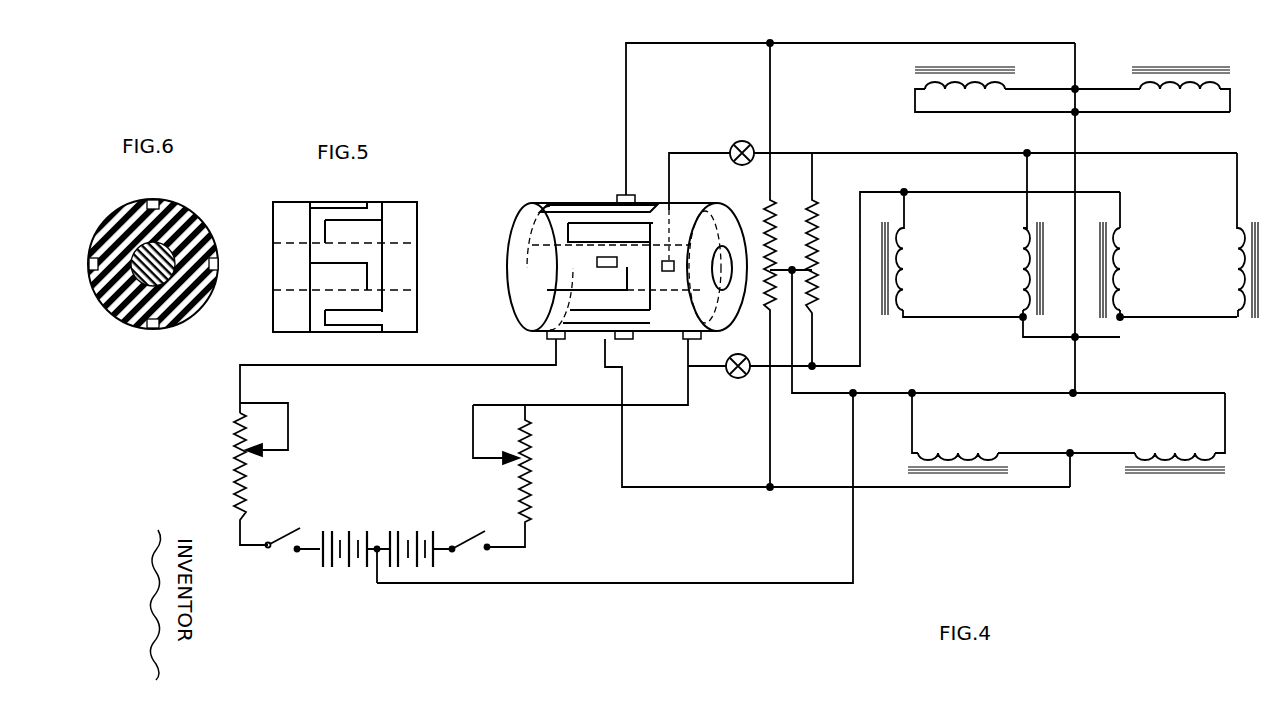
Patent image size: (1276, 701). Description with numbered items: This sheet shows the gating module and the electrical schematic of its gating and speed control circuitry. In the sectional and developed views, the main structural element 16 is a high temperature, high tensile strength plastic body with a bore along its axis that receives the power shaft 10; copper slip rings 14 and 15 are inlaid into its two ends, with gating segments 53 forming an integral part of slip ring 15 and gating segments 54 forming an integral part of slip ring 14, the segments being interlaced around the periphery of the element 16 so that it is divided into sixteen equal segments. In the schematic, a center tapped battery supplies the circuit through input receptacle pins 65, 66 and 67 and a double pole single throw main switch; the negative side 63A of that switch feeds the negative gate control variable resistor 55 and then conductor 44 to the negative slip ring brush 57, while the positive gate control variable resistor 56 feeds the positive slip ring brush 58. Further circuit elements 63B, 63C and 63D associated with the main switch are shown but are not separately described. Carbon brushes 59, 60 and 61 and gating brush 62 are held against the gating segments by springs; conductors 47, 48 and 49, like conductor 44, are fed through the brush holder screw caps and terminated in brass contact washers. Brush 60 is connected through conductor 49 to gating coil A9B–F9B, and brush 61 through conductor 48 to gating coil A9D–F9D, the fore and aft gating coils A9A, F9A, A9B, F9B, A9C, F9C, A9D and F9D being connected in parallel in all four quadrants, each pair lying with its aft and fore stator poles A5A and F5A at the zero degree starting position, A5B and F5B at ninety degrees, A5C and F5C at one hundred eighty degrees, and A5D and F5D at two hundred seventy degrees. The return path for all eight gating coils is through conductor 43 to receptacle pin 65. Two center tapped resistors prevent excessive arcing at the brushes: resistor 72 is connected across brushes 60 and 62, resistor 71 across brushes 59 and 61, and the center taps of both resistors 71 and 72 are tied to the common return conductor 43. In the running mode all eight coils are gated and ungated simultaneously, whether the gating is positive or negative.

In FIG. 6, the power shaft 10 is at (138, 268).
In FIG. 5, the slip ring 14 is at (402, 203).
In FIG. 4, the slip ring 14 is at (720, 204).
In FIG. 5, the slip ring 15 is at (273, 228).
In FIG. 4, the slip ring 15 is at (515, 210).
In FIG. 6, the main structural element 16 is at (112, 230).
In FIG. 4, the return conductor 43 is at (850, 514).
In FIG. 4, the conductor 44 is at (390, 368).
In FIG. 4, the conductor 47 is at (682, 152).
In FIG. 4, the conductor 48 is at (622, 455).
In FIG. 4, the conductor 49 is at (745, 43).
In FIG. 6, the gating segments 53 is at (128, 208).
In FIG. 5, the gating segments 53 is at (316, 207).
In FIG. 4, the gating segments 53 is at (560, 197).
In FIG. 6, the gating segments 54 is at (157, 202).
In FIG. 5, the gating segments 54 is at (378, 235).
In FIG. 4, the gating segments 54 is at (570, 229).
In FIG. 4, the negative gate control variable resistor 55 is at (232, 470).
In FIG. 4, the positive gate control variable resistor 56 is at (535, 474).
In FIG. 4, the negative slip ring brush 57 is at (547, 337).
In FIG. 4, the positive slip ring brush 58 is at (683, 338).
In FIG. 4, the carbon brush 59 is at (672, 258).
In FIG. 4, the carbon brush 60 is at (617, 196).
In FIG. 4, the carbon brush 61 is at (600, 262).
In FIG. 4, the gating brush 62 is at (615, 338).
In FIG. 4, the negative side of main switch 63A is at (260, 557).
In FIG. 4, the switch 63B is at (489, 549).
In FIG. 4, the indicator lamp 63C is at (716, 136).
In FIG. 4, the indicator lamp 63D is at (730, 372).
In FIG. 4, the input receptacle pin 65 is at (378, 536).
In FIG. 4, the input receptacle pin 66 is at (312, 538).
In FIG. 4, the input receptacle pin 67 is at (444, 542).
In FIG. 4, the center tapped resistor 71 is at (810, 312).
In FIG. 4, the center tapped resistor 72 is at (772, 213).
In FIG. 4, the aft stator pole A5A is at (1030, 224).
In FIG. 4, the aft stator pole A5B is at (935, 66).
In FIG. 4, the aft stator pole A5C is at (884, 316).
In FIG. 4, the aft stator pole A5D is at (965, 476).
In FIG. 4, the gating coil A9A is at (1023, 312).
In FIG. 4, the gating coil A9B is at (992, 76).
In FIG. 4, the armature winding C A9C is at (903, 258).
In FIG. 4, the gating coil A9D is at (978, 458).
In FIG. 4, the fore stator pole F5A is at (1245, 226).
In FIG. 4, the fore stator pole F5B is at (1150, 66).
In FIG. 4, the fore stator pole F5C is at (1108, 320).
In FIG. 4, the fore stator pole F5D is at (1192, 476).
In FIG. 4, the gating coil F9A is at (1238, 298).
In FIG. 4, the gating coil F9B is at (1195, 66).
In FIG. 4, the field winding C F9C is at (1120, 256).
In FIG. 4, the gating coil F9D is at (1178, 456).